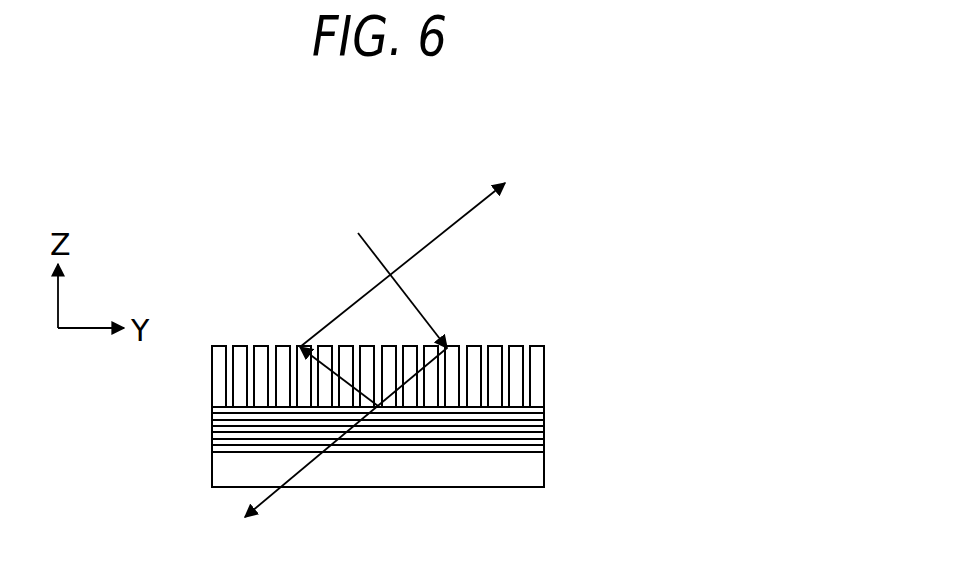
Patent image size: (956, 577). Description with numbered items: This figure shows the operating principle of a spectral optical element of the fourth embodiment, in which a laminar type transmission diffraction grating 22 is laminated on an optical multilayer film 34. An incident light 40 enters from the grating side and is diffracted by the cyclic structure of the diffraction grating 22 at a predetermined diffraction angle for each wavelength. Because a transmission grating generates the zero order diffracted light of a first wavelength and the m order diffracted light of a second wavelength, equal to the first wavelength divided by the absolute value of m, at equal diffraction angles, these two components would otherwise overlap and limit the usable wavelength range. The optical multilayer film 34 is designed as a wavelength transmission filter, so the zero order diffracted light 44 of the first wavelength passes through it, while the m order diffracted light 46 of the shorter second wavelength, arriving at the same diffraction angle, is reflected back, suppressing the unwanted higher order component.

The diffraction grating 22 is at (538, 350).
The optical multilayer film 34 is at (545, 430).
The incident light 40 is at (369, 247).
The 0 order diffracted light 44 is at (300, 472).
The m order diffracted light 46 is at (443, 232).